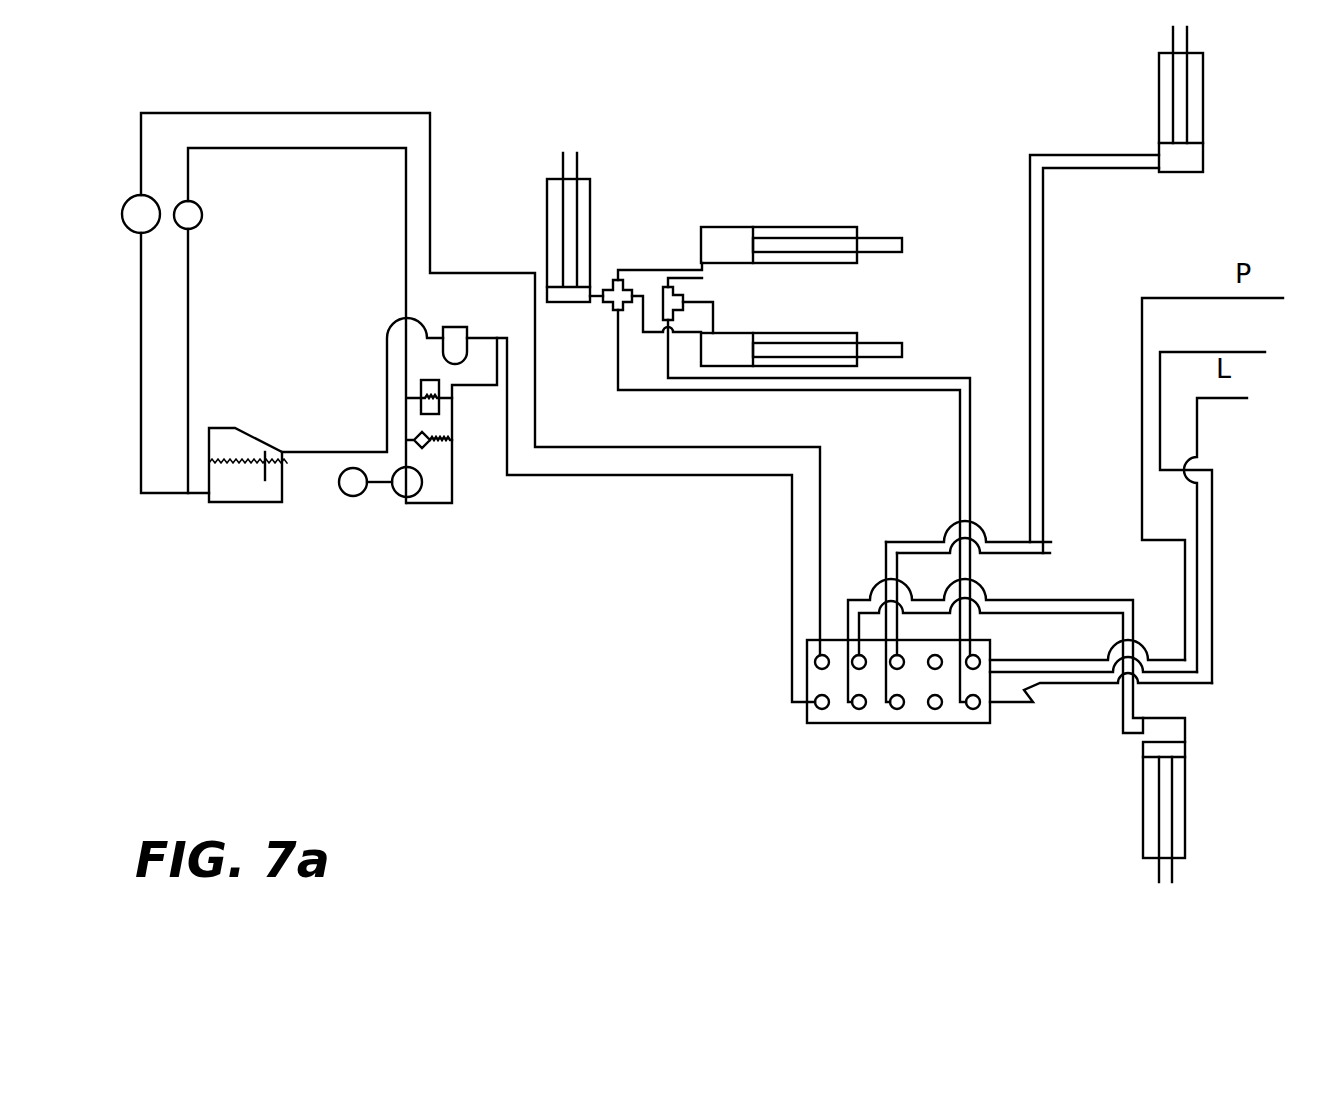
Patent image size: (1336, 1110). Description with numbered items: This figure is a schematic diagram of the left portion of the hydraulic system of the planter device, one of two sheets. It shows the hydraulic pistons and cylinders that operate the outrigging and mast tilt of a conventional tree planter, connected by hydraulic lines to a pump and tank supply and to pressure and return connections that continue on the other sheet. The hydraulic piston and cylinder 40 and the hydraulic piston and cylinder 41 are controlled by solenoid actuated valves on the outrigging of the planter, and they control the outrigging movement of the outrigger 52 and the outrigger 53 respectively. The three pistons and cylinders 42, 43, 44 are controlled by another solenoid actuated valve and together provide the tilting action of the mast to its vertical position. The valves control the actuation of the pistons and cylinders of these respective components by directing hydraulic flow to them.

The hydraulic piston and cylinder 40 is at (1159, 125).
The hydraulic piston and cylinder 41 is at (1142, 795).
The piston and cylinder 42 is at (767, 227).
The piston and cylinder 43 is at (792, 333).
The piston and cylinder 44 is at (547, 230).
The outrigger 52 is at (1228, 148).
The outrigger 53 is at (1230, 773).